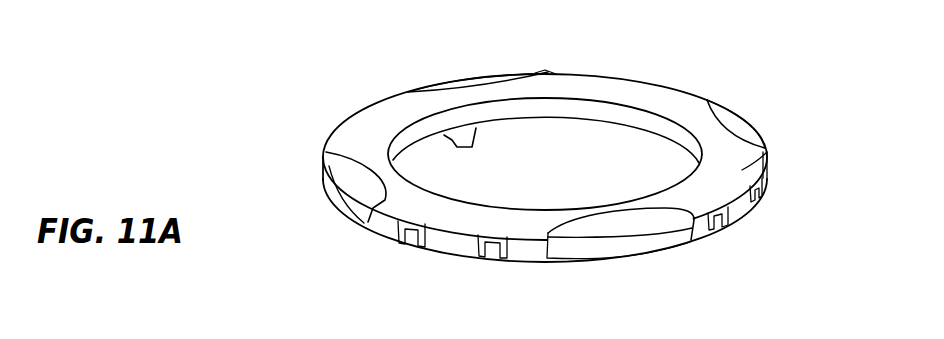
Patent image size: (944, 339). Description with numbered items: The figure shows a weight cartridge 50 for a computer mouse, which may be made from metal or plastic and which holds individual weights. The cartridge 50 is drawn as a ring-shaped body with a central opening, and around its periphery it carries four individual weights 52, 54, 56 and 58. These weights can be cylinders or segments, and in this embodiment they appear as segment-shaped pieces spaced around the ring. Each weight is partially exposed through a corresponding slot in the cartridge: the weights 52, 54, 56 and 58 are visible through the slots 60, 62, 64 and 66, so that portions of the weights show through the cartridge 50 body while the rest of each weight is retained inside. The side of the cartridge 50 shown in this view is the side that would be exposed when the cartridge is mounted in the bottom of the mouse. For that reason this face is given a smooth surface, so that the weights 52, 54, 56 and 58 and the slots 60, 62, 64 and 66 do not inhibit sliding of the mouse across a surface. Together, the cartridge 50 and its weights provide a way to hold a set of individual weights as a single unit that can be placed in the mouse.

The cartridge 50 is at (657, 84).
The weight 52 is at (746, 126).
The weight 54 is at (332, 195).
The weight 56 is at (483, 78).
The weight 58 is at (643, 236).
The slot 60 is at (756, 92).
The slot 62 is at (538, 52).
The slot 64 is at (300, 170).
The slot 66 is at (582, 274).